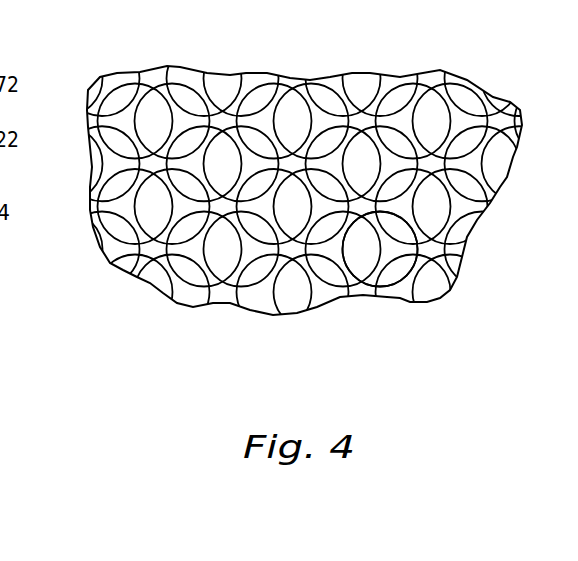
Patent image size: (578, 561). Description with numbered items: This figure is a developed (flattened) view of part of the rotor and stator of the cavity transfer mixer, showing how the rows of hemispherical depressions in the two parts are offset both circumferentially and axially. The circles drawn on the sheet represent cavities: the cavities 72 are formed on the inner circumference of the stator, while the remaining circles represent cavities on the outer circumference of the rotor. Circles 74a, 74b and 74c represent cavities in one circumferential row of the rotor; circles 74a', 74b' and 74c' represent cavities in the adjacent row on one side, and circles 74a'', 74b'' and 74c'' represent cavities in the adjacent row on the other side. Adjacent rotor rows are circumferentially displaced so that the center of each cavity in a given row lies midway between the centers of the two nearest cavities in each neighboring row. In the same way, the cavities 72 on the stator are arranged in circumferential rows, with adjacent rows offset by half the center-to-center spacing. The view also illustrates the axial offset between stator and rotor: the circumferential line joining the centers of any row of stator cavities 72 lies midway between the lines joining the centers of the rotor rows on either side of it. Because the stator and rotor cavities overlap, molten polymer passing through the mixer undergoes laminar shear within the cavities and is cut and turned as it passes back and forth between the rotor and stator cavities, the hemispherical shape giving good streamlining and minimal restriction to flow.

The cavities 72 is at (274, 164).
The cavity 74a is at (309, 121).
The cavity 74a' is at (241, 76).
The cavity 74a'' is at (380, 73).
The cavity 74b is at (311, 206).
The cavity 74b' is at (106, 163).
The cavity 74b'' is at (512, 163).
The cavity 74c is at (311, 305).
The cavity 74c' is at (241, 249).
The cavity 74c'' is at (380, 278).